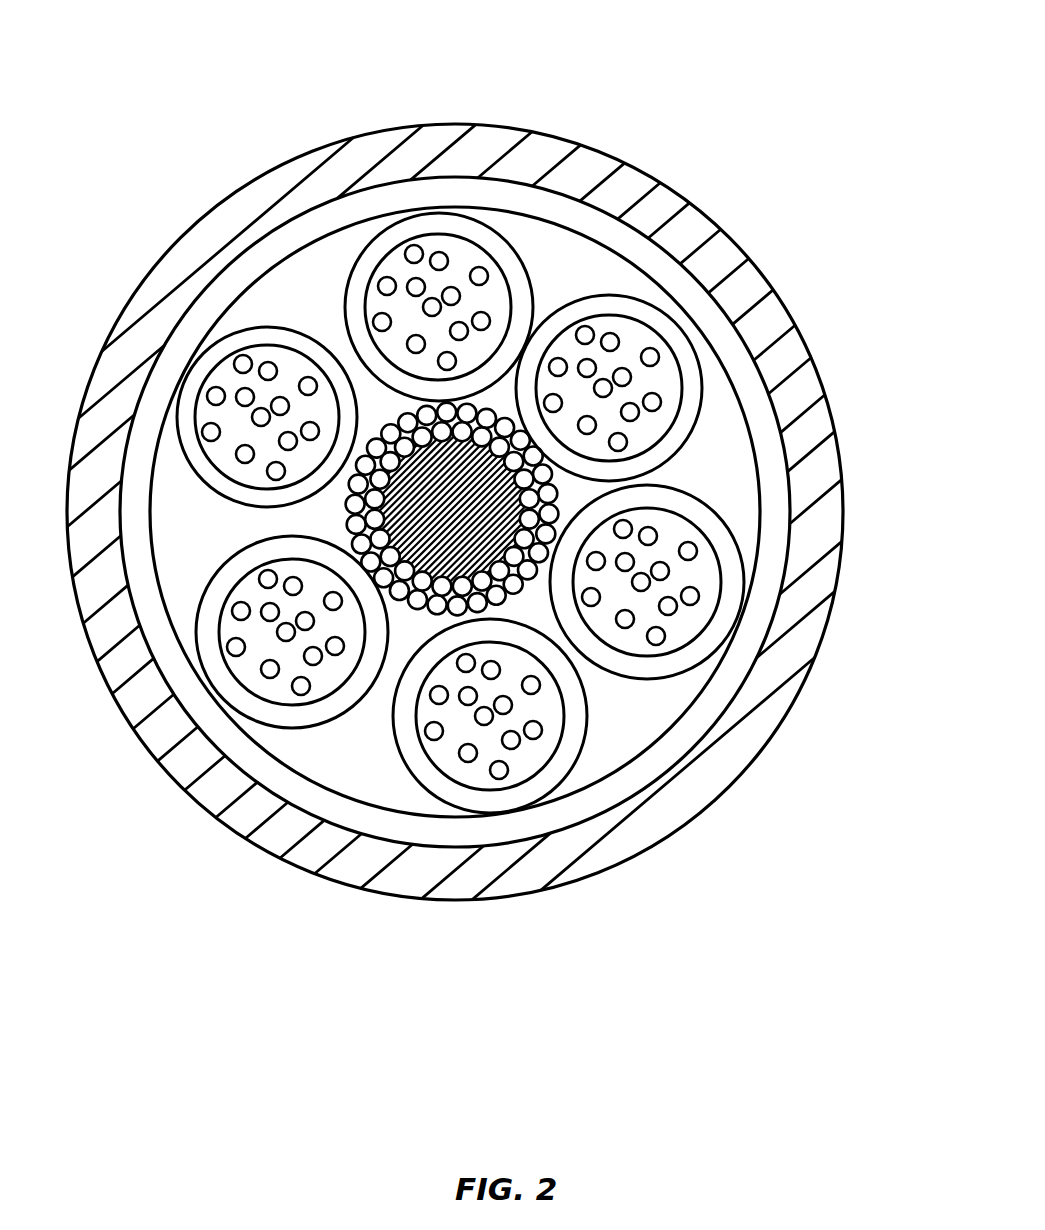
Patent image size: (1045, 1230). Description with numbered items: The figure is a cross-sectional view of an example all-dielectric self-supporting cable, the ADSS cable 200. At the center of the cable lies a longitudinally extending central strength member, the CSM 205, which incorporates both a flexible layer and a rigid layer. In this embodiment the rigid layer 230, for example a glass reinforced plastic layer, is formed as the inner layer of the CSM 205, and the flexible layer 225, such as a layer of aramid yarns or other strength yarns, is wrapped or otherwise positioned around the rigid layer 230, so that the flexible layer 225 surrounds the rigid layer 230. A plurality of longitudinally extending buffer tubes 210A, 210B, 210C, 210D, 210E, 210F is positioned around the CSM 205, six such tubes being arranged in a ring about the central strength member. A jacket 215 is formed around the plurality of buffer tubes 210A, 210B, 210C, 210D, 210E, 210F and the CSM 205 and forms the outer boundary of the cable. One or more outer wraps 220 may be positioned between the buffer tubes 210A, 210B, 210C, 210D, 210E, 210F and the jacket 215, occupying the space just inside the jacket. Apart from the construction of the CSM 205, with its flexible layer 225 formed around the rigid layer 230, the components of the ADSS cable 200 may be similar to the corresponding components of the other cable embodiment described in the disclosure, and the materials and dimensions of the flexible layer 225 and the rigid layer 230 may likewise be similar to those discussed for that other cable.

The ADSS cable 200 is at (160, 60).
The central strength member 205 is at (590, 487).
The buffer tube 210A is at (508, 232).
The buffer tube 210B is at (708, 388).
The buffer tube 210C is at (690, 687).
The buffer tube 210D is at (385, 759).
The buffer tube 210E is at (233, 728).
The buffer tube 210F is at (255, 320).
The jacket 215 is at (408, 110).
The outer wrap 220 is at (608, 196).
The flexible layer 225 is at (553, 623).
The rigid layer 230 is at (396, 440).